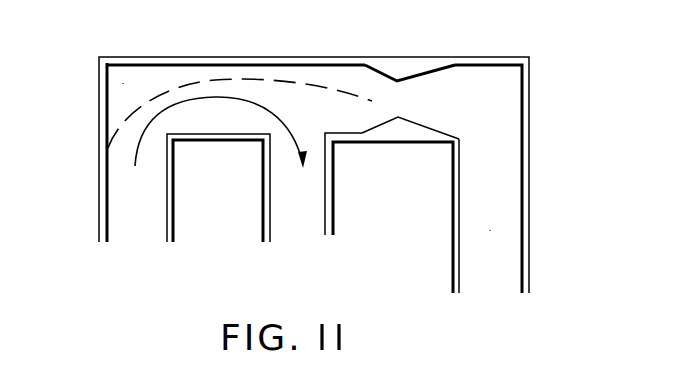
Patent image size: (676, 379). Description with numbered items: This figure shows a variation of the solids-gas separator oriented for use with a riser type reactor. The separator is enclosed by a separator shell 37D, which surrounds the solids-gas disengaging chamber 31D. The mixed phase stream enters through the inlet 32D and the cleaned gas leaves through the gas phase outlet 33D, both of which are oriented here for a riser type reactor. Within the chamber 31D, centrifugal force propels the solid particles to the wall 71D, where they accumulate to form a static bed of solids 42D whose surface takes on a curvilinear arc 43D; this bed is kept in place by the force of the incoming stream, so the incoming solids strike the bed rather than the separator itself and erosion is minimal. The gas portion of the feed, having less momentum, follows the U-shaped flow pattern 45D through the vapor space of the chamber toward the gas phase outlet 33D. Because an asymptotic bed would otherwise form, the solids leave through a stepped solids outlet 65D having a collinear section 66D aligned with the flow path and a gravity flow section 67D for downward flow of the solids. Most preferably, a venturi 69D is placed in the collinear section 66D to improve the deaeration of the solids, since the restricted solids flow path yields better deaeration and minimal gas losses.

The solids-gas disengaging chamber 31D is at (229, 129).
The inlet 32D is at (133, 232).
The gas phase outlet 33D is at (297, 220).
The separator shell 37D is at (293, 57).
The static bed of solids 42D is at (123, 83).
The curvilinear arc 43D is at (187, 80).
The flow pattern 45D is at (293, 137).
The stepped solids outlet 65D is at (497, 91).
The collinear section 66D is at (362, 111).
The gravity flow section 67D is at (490, 230).
The venturi 69D is at (405, 72).
The wall 71D is at (213, 64).